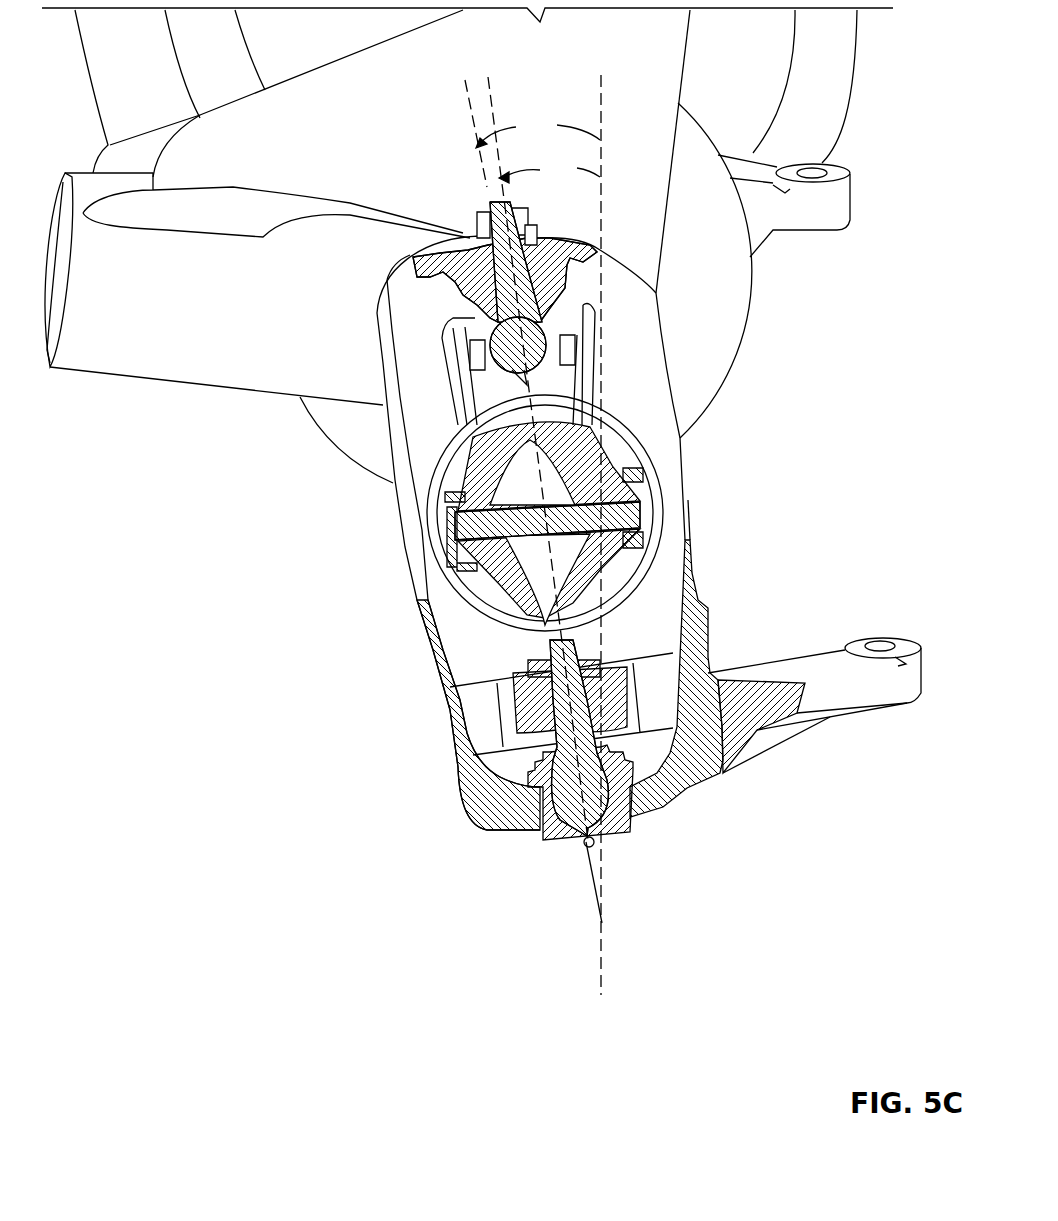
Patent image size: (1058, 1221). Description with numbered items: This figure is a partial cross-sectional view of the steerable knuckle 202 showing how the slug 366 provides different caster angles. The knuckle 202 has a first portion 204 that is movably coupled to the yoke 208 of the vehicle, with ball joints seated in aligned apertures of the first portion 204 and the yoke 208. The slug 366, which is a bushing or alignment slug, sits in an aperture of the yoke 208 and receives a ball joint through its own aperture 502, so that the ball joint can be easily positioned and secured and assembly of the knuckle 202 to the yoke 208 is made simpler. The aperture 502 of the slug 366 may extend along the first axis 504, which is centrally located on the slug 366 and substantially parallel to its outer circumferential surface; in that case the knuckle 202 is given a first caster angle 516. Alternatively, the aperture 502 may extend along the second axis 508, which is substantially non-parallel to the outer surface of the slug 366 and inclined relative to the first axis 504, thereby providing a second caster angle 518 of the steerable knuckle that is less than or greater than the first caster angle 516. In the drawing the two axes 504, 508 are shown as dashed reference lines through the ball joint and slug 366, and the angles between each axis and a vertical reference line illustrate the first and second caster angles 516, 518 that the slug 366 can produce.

The steerable knuckle 202 is at (226, 553).
The first portion 204 is at (730, 773).
The yoke 208 is at (668, 372).
The slug 366 is at (440, 267).
The aperture 502 is at (548, 256).
The first axis 504 is at (488, 81).
The second axis 508 is at (468, 100).
The first caster angle 516 is at (548, 177).
The second caster angle 518 is at (530, 123).